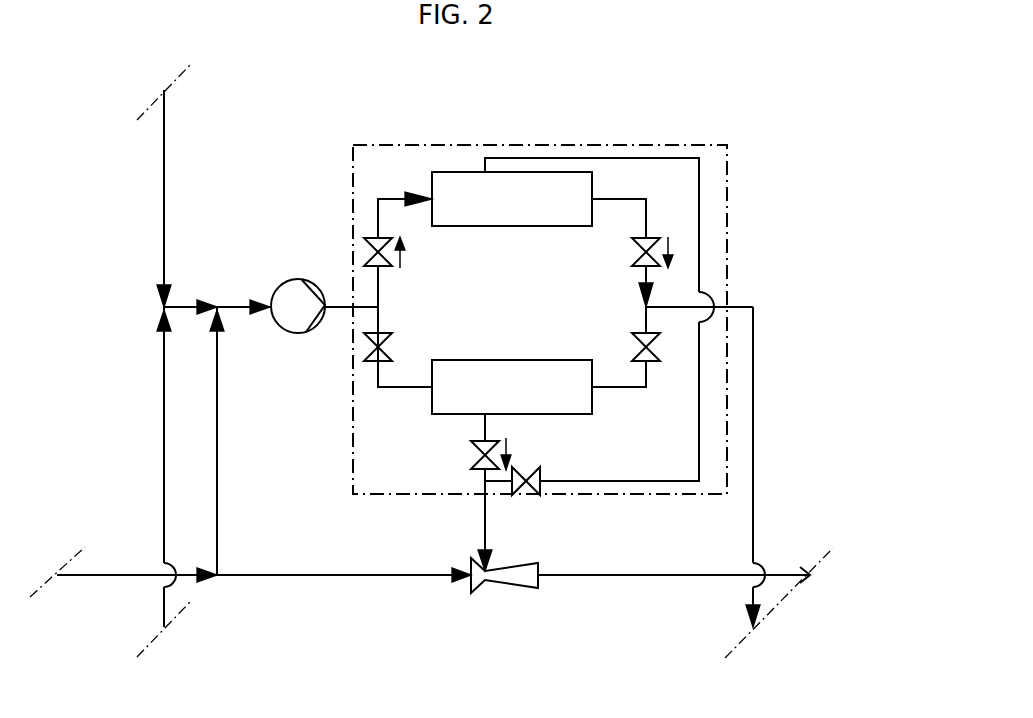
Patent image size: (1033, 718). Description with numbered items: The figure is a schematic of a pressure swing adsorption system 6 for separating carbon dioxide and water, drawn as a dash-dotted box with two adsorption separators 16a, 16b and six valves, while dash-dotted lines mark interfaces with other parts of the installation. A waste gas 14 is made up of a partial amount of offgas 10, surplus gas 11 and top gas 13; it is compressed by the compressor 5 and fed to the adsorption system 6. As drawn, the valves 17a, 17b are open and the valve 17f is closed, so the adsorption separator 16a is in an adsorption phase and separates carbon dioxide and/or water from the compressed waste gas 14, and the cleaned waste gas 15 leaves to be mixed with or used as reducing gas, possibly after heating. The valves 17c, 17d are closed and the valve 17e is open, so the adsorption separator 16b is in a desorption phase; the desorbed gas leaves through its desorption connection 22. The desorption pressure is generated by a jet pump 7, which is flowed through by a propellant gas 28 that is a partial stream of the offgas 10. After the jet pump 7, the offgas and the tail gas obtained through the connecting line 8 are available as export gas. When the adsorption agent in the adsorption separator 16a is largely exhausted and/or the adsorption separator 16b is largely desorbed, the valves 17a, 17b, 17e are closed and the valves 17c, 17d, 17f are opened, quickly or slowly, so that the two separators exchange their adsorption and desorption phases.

The compressor 5 is at (298, 305).
The pressure swing adsorption system 6 is at (740, 168).
The jet pump 7 is at (508, 603).
The connecting line 8 is at (485, 518).
The offgas 10 is at (124, 576).
The surplus gas 11 is at (164, 253).
The top gas 13 is at (164, 412).
The waste gas 14 is at (224, 304).
The cleaned waste gas 15 is at (753, 385).
The adsorption separator 16a is at (452, 188).
The adsorption separator 16b is at (539, 373).
The valve 17a is at (363, 252).
The valve 17b is at (630, 257).
The valve 17c is at (390, 347).
The valve 17d is at (660, 348).
The valve 17e is at (470, 456).
The valve 17f is at (521, 450).
The desorption connection 22 is at (485, 425).
The propellant gas 28 is at (345, 578).